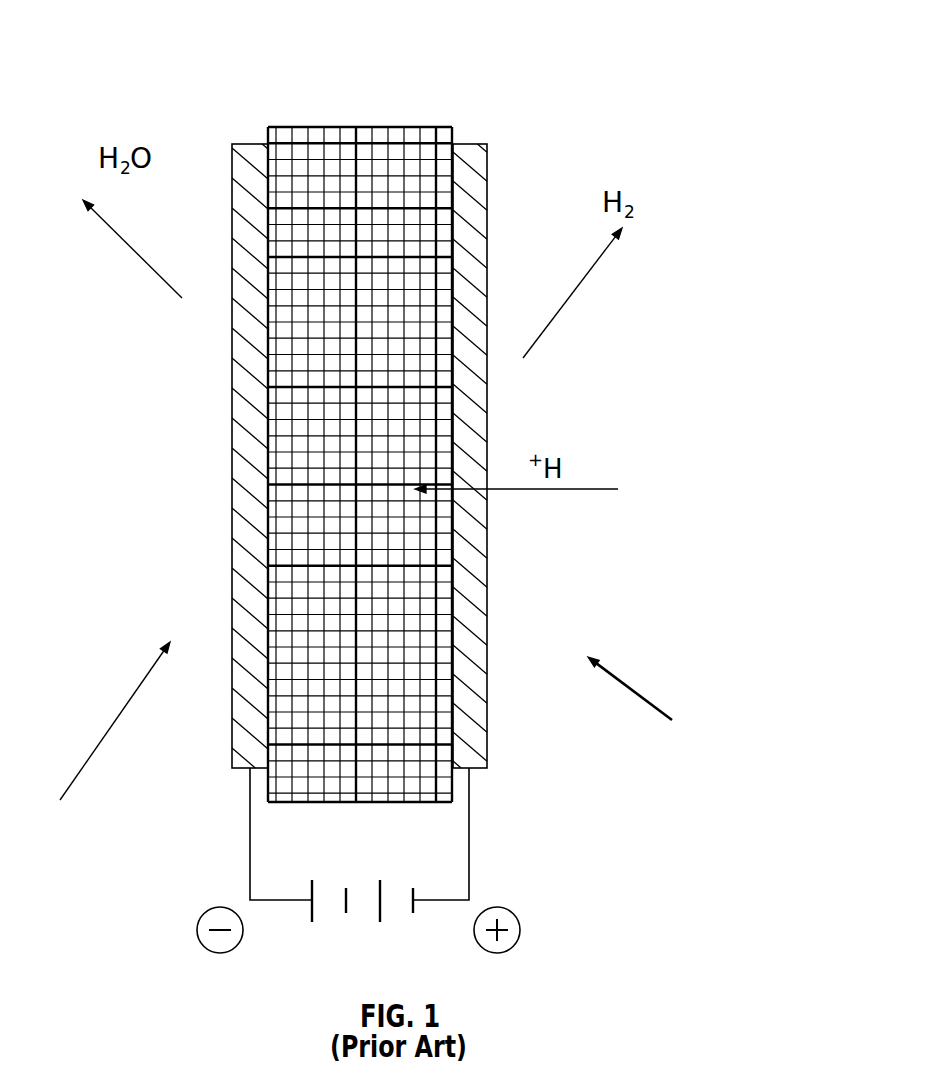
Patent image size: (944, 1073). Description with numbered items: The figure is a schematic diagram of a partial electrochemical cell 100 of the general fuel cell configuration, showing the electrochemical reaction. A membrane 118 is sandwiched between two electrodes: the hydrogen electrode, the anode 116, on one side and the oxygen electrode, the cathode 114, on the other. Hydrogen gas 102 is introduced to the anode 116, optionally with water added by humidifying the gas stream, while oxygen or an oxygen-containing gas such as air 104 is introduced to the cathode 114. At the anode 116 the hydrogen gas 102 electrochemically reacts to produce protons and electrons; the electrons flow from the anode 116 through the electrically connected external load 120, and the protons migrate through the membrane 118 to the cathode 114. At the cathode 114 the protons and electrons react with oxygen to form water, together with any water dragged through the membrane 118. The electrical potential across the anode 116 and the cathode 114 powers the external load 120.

The electrolysis cell system (prior art) 100 is at (133, 66).
The hydrogen gas 102 is at (665, 708).
The air 104 is at (112, 735).
The cathode 114 is at (250, 143).
The anode 116 is at (467, 142).
The membrane 118 is at (357, 128).
The external load 120 is at (493, 828).